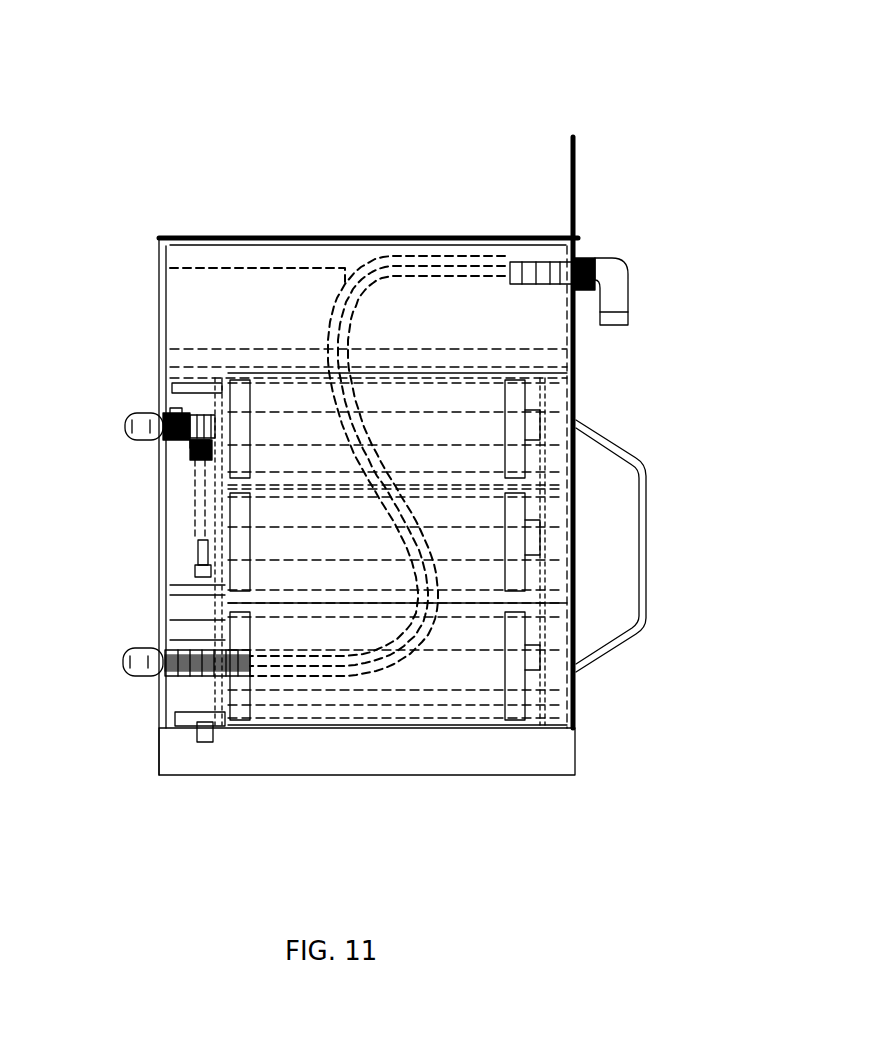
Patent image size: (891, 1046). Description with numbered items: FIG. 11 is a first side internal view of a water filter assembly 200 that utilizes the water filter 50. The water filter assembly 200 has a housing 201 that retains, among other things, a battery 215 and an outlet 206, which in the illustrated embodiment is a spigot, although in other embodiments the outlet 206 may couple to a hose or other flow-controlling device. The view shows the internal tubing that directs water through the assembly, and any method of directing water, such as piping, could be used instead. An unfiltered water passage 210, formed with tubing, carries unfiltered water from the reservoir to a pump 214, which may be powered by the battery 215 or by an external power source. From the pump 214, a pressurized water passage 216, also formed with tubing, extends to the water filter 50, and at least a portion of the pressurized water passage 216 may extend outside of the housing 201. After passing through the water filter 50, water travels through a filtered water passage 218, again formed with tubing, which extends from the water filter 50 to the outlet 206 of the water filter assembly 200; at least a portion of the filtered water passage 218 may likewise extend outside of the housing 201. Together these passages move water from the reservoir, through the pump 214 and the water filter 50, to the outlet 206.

The water filter assembly 200 is at (781, 109).
The housing 201 is at (410, 237).
The battery 215 is at (195, 290).
The water filter 50 is at (510, 505).
The unfiltered water passage 210 is at (205, 748).
The outlet 206 is at (627, 283).
The filtered water passage 218 is at (432, 280).
The pump 214 is at (163, 413).
The pressurized water passage 216 is at (130, 440).